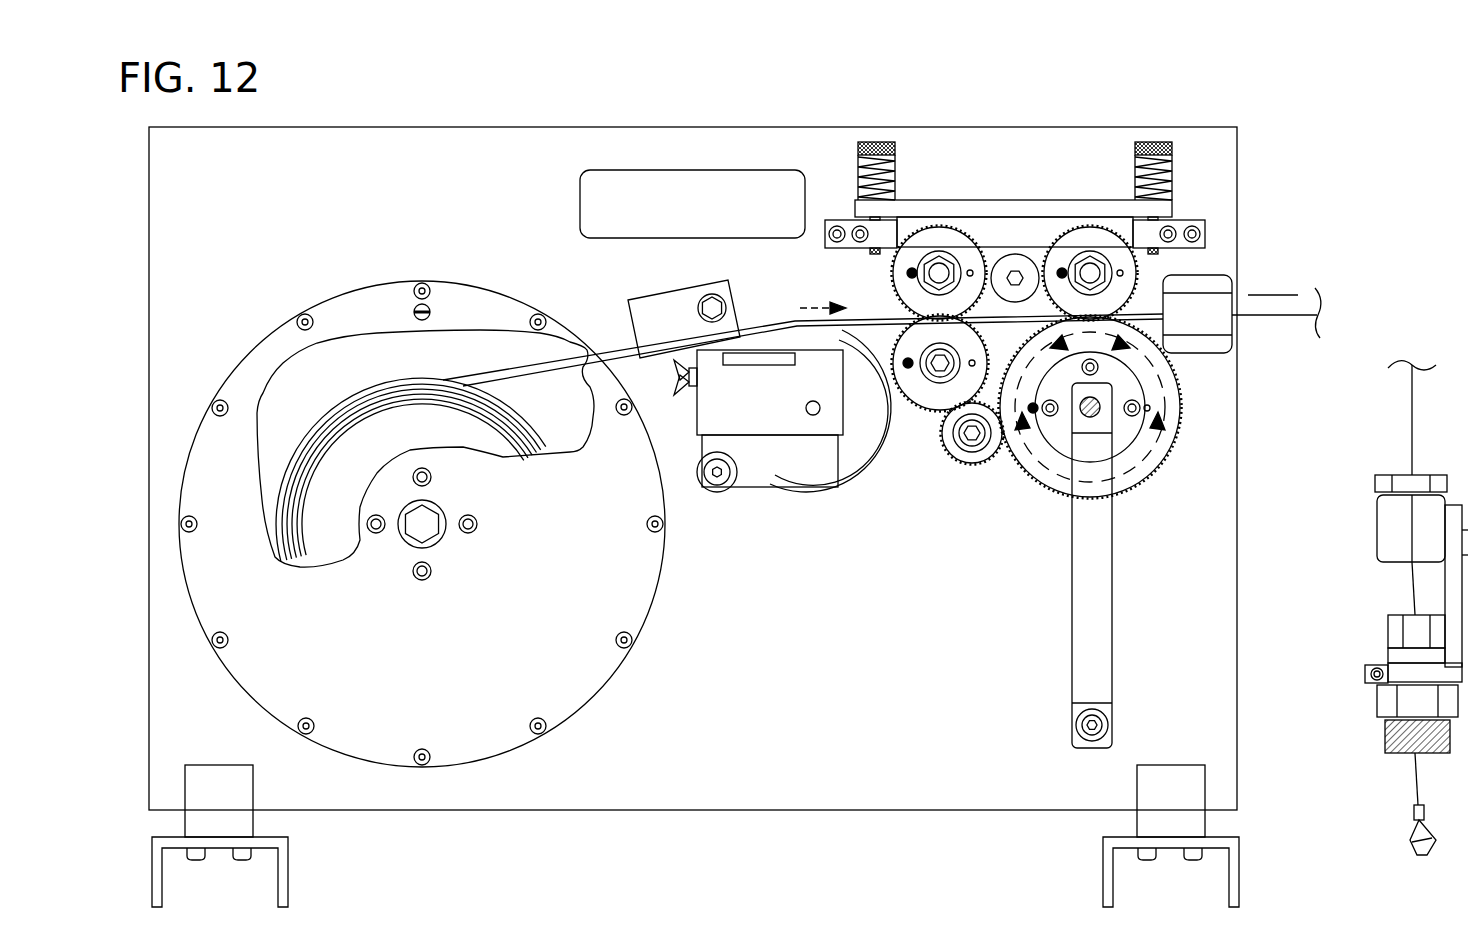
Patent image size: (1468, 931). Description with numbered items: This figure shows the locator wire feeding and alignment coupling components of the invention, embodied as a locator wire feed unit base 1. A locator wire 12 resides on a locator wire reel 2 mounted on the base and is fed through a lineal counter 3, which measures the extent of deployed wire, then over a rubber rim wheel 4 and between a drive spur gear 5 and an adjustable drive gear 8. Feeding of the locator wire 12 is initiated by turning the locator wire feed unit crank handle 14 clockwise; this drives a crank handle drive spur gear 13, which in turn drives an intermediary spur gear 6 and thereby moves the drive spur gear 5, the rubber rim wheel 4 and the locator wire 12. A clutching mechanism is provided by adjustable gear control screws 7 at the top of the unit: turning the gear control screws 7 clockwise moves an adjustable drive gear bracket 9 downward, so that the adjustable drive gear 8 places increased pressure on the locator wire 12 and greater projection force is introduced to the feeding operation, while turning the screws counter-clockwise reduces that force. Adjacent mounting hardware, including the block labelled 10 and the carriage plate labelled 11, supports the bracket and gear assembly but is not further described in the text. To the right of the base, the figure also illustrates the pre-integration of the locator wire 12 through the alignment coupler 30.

The locator wire feed unit base 1 is at (470, 126).
The locator wire reel 2 is at (343, 325).
The lineal counter 3 is at (785, 405).
The rubber rim wheel 4 is at (887, 452).
The drive spur gear 5 is at (912, 418).
The intermediary spur gear 6 is at (990, 463).
The adjustable gear control screws 7 is at (1130, 185).
The adjustable drive gear 8 is at (968, 240).
The adjustable drive gear bracket 9 is at (1175, 205).
The roller support block 10 is at (1205, 235).
The roller carriage plate 11 is at (1090, 227).
The locator wire 12 is at (1410, 388).
The crank handle drive spur gear 13 is at (1183, 407).
The locator wire feed unit crank handle 14 is at (1107, 566).
The alignment coupler 30 is at (1343, 692).